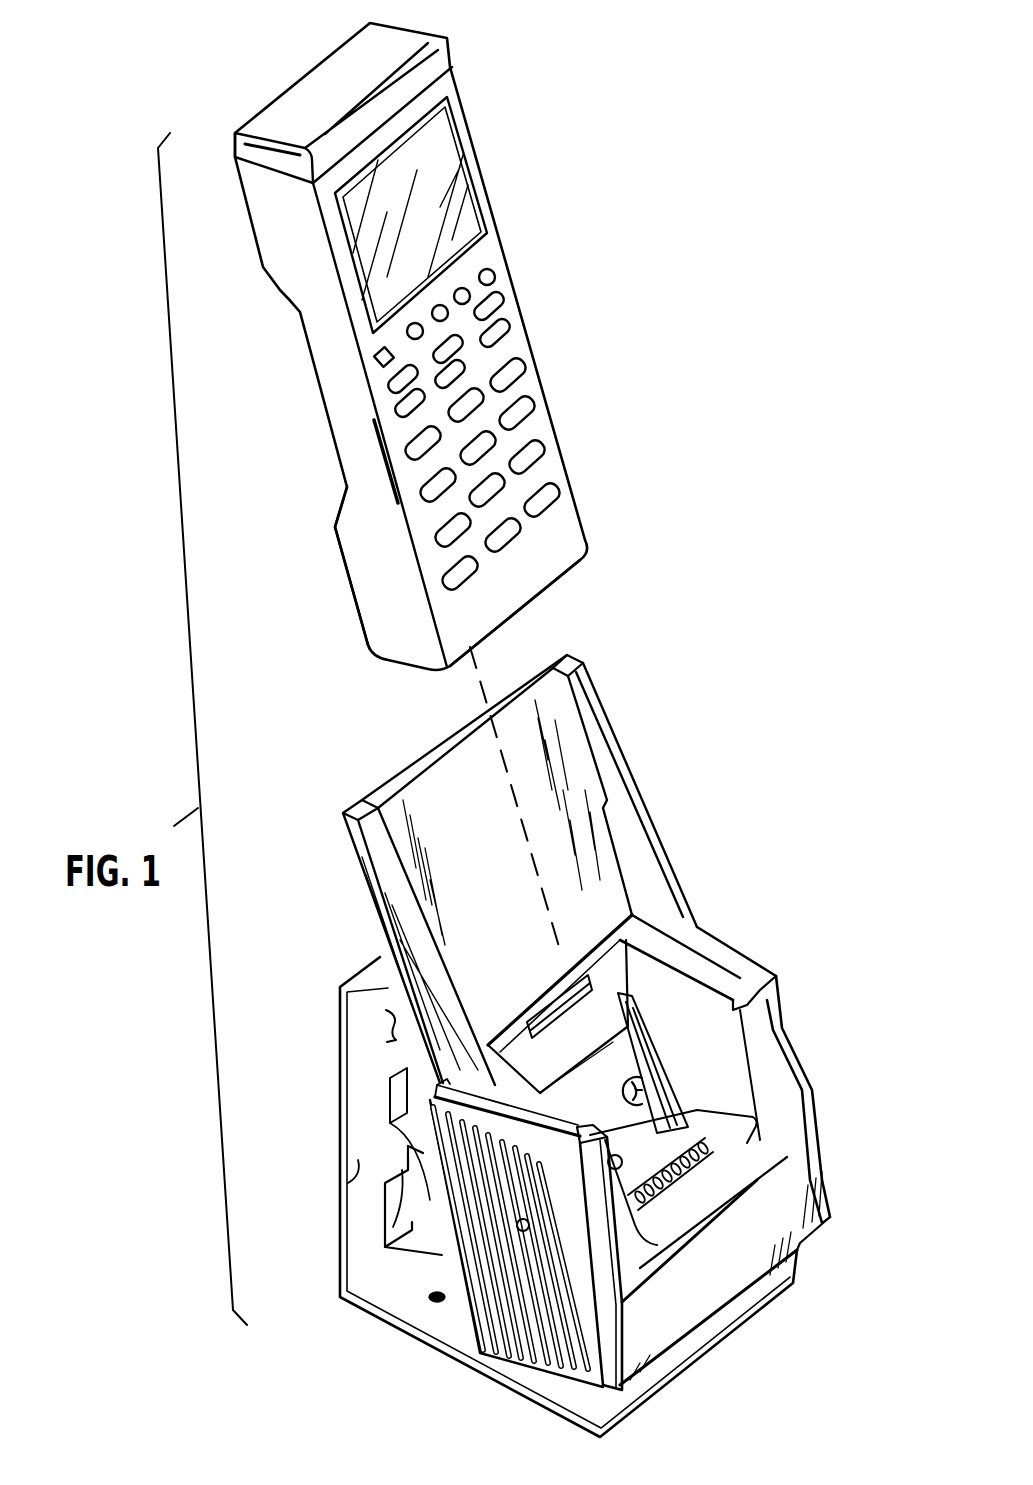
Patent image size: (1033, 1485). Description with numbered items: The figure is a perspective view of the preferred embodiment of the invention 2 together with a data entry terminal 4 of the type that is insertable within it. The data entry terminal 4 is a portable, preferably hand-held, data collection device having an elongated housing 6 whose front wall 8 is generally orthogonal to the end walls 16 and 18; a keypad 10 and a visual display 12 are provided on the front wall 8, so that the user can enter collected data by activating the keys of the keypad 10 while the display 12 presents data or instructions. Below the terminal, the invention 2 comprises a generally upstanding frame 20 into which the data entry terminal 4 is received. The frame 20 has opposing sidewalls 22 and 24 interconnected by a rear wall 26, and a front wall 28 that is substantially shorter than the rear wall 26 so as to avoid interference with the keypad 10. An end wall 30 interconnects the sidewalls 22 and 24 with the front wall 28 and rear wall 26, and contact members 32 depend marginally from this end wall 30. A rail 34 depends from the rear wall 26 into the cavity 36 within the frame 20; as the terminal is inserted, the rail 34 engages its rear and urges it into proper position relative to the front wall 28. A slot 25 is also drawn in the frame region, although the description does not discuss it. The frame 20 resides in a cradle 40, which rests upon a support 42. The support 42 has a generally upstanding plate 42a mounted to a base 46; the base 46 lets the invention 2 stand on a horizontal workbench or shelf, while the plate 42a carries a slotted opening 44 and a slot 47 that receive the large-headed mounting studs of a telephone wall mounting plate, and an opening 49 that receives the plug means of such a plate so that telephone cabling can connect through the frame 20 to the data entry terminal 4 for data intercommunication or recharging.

The invention 2 is at (768, 864).
The data entry terminal 4 is at (548, 262).
The elongated housing 6 is at (550, 405).
The front wall 8 is at (563, 530).
The keypad 10 is at (508, 347).
The visual display 12 is at (455, 150).
The end wall 16 is at (335, 58).
The end wall 18 is at (563, 568).
The frame 20 is at (717, 1010).
The sidewall 22 is at (750, 987).
The sidewall 24 is at (510, 1083).
The slot 25 is at (540, 1013).
The rear wall 26 is at (645, 1015).
The front wall 28 is at (757, 1180).
The end wall 30 is at (697, 1108).
The contact members 32 is at (705, 1167).
The rail 34 is at (612, 962).
The cavity 36 is at (633, 1122).
The cradle 40 is at (585, 772).
The support 42 is at (374, 1205).
The plate 42a is at (358, 1160).
The slotted opening 44 is at (392, 1030).
The base 46 is at (383, 1300).
The slot 47 is at (395, 1230).
The opening 49 is at (390, 1123).